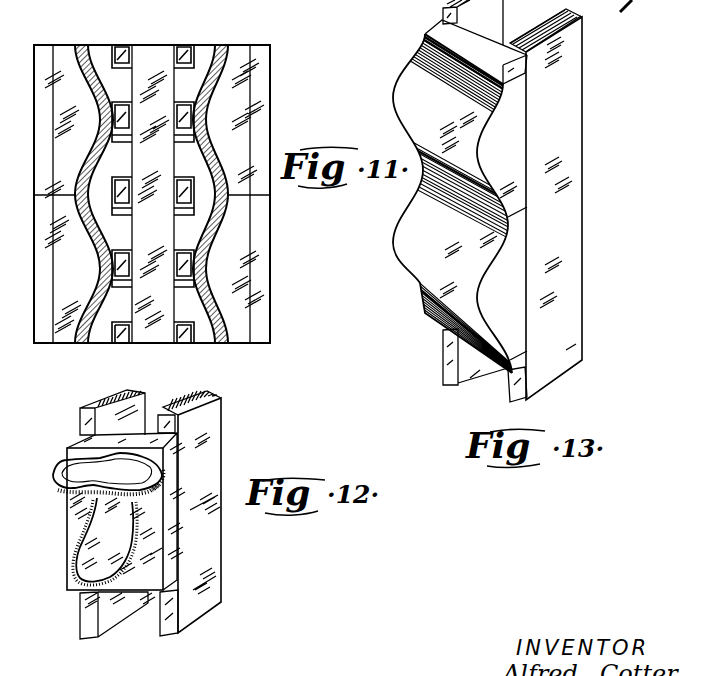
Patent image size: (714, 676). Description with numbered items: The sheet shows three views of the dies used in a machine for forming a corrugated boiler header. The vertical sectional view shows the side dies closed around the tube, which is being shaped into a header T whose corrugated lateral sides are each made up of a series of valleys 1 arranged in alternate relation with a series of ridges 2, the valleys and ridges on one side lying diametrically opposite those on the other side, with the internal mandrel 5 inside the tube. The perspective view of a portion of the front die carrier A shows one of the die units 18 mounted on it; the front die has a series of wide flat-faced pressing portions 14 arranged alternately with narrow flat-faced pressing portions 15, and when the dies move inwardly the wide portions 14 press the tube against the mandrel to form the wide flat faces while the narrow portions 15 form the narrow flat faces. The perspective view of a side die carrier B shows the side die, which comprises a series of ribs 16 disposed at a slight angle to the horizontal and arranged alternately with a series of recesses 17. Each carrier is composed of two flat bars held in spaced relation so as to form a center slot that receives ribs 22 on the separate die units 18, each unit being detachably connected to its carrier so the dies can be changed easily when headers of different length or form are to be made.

In FIG. 11, the valleys 1 is at (97, 129).
In FIG. 11, the ridges 2 is at (246, 158).
In FIG. 11, the central stud 5 is at (162, 160).
In FIG. 11, the partition wall T is at (212, 343).
In FIG. 12, the wide flat-faced pressing portions 14 is at (72, 482).
In FIG. 12, the narrow flat-faced pressing portions 15 is at (80, 542).
In FIG. 13, the ribs 16 is at (465, 146).
In FIG. 13, the recesses 17 is at (423, 190).
In FIG. 13, the die units 18 is at (521, 201).
In FIG. 12, the die units 18 is at (173, 467).
In FIG. 13, the ribs 22 is at (490, 45).
In FIG. 12, the ribs 22 is at (142, 423).
In FIG. 12, the front die carrier A is at (207, 476).
In FIG. 13, the side die carrier B is at (567, 80).